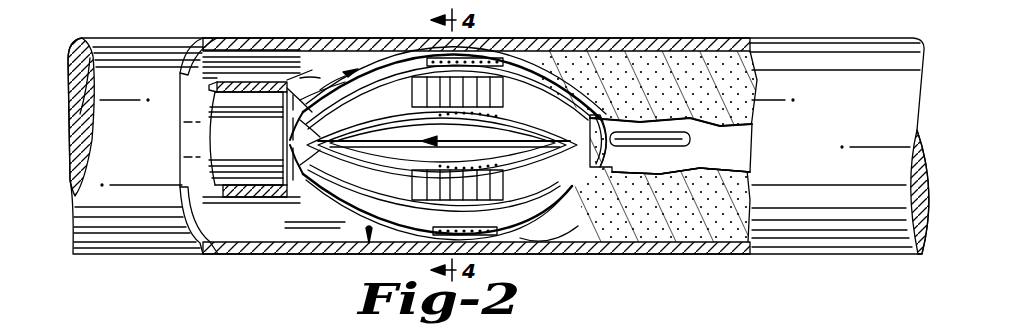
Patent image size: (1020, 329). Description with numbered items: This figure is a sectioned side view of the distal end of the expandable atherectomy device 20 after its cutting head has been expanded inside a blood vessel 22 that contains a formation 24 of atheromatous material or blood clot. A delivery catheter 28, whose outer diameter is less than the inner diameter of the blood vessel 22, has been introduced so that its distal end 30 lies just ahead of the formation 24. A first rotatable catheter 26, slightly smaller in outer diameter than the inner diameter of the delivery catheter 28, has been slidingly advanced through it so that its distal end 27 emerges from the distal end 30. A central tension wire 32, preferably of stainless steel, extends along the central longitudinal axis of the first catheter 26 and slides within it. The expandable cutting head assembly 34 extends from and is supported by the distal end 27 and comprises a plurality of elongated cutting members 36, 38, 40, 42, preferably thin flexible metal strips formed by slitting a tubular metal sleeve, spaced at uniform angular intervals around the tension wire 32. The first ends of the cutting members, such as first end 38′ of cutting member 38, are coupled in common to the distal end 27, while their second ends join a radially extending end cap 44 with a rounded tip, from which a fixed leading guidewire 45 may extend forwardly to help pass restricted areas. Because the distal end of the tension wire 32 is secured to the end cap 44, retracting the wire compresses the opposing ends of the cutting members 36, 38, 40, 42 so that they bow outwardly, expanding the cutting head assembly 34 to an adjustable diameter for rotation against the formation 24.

The expandable atherectomy device 20 is at (358, 258).
The blood vessel 22 is at (161, 60).
The formation of atheromatous material 24 is at (663, 63).
The first rotatable catheter 26 is at (180, 160).
The distal end of first catheter 27 is at (281, 202).
The delivery catheter 28 is at (205, 88).
The distal end of delivery catheter 30 is at (300, 105).
The tension wire 32 is at (485, 138).
The cutting head assembly 34 is at (568, 190).
The elongated cutting member 36 is at (528, 100).
The elongated cutting member 38 is at (567, 110).
The first end of cutting member 38′ is at (300, 120).
The elongated cutting member 40 is at (513, 205).
The elongated cutting member 42 is at (556, 240).
The end cap 44 is at (617, 180).
The fixed leading guidewire 45 is at (691, 122).